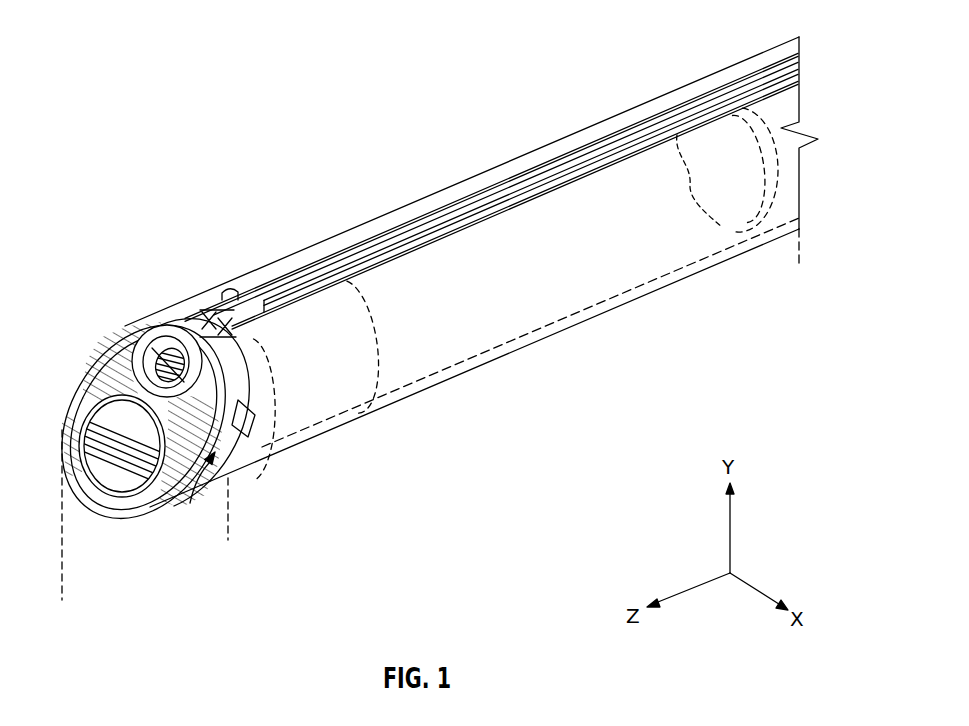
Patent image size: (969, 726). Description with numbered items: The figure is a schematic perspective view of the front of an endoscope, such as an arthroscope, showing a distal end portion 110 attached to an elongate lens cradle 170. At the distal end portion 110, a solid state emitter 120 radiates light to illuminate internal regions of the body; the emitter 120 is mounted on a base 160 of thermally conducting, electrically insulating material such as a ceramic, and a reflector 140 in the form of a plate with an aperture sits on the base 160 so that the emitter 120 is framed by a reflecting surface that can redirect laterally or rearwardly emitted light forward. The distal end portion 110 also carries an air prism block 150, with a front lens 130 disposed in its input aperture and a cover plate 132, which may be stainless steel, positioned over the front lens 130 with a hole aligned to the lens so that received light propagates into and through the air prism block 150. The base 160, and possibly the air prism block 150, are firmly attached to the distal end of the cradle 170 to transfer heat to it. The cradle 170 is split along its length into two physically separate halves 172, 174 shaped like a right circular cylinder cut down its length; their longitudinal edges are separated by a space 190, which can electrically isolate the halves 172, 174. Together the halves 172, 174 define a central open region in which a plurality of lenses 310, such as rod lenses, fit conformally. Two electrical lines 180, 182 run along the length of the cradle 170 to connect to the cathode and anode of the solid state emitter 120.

The distal end portion 110 is at (138, 461).
The solid state emitter 120 is at (158, 350).
The front lens 130 is at (120, 418).
The cover plate 132 is at (110, 373).
The reflector 140 is at (222, 370).
The air prism block 150 is at (193, 497).
The base 160 is at (245, 408).
The lens cradle 170 is at (798, 268).
The first half of the cradle 172 is at (655, 105).
The second half of the cradle 174 is at (604, 245).
The first electrical line 180 is at (387, 235).
The second electrical line 182 is at (343, 263).
The space 190 is at (803, 52).
The lenses 310 is at (305, 307).